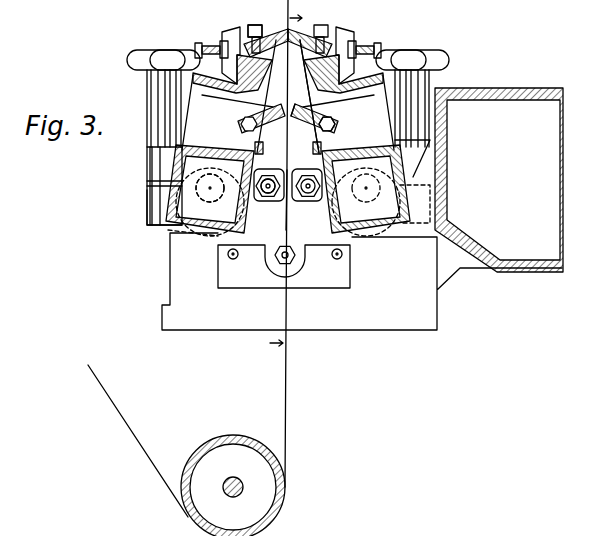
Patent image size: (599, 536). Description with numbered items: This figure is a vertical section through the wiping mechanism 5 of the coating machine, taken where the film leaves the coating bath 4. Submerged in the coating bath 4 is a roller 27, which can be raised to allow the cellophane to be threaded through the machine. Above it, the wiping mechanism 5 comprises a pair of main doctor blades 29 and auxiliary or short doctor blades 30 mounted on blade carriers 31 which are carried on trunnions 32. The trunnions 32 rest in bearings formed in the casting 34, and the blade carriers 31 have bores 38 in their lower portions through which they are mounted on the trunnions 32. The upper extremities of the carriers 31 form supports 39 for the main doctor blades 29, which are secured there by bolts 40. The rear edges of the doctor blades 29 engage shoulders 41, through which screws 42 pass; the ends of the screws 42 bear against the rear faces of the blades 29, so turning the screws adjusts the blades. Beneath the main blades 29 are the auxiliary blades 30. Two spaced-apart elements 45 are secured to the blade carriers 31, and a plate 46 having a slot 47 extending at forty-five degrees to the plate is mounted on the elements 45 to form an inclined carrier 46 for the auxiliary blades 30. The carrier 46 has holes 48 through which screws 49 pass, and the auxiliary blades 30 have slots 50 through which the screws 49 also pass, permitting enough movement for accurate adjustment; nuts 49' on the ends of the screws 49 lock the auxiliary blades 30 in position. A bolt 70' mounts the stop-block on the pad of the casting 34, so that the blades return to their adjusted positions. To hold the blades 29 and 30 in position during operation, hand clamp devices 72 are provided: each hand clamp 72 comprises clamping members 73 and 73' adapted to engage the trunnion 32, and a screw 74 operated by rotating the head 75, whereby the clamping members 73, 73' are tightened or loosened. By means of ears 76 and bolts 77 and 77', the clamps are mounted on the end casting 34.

The coating bath 4 is at (290, 181).
The wiping mechanism 5 is at (292, 200).
The roller 27 is at (214, 437).
The doctor blades 29 is at (283, 28).
The auxiliary doctor blades 30 is at (288, 177).
The blade carriers 31 is at (195, 110).
The trunnions 32 is at (170, 230).
The casting 34 is at (362, 281).
The bores 38 is at (207, 233).
The supports 39 is at (232, 40).
The bolts 40 is at (252, 23).
The shoulders 41 is at (340, 42).
The screws 42 is at (365, 47).
The elements 45 is at (307, 120).
The plate 46 is at (306, 147).
The slot 47 is at (271, 148).
The holes 48 is at (330, 130).
The screws 49 is at (334, 119).
The nuts 49' is at (261, 111).
The slots 50 is at (338, 128).
The bolt 70' is at (284, 277).
The hand clamp devices 72 is at (152, 82).
The clamping member 73 is at (152, 186).
The clamping member 73' is at (151, 207).
The screw 74 is at (150, 184).
The head 75 is at (158, 57).
The ears 76 is at (262, 200).
The bolt 77 is at (271, 205).
The bolt 77' is at (308, 200).